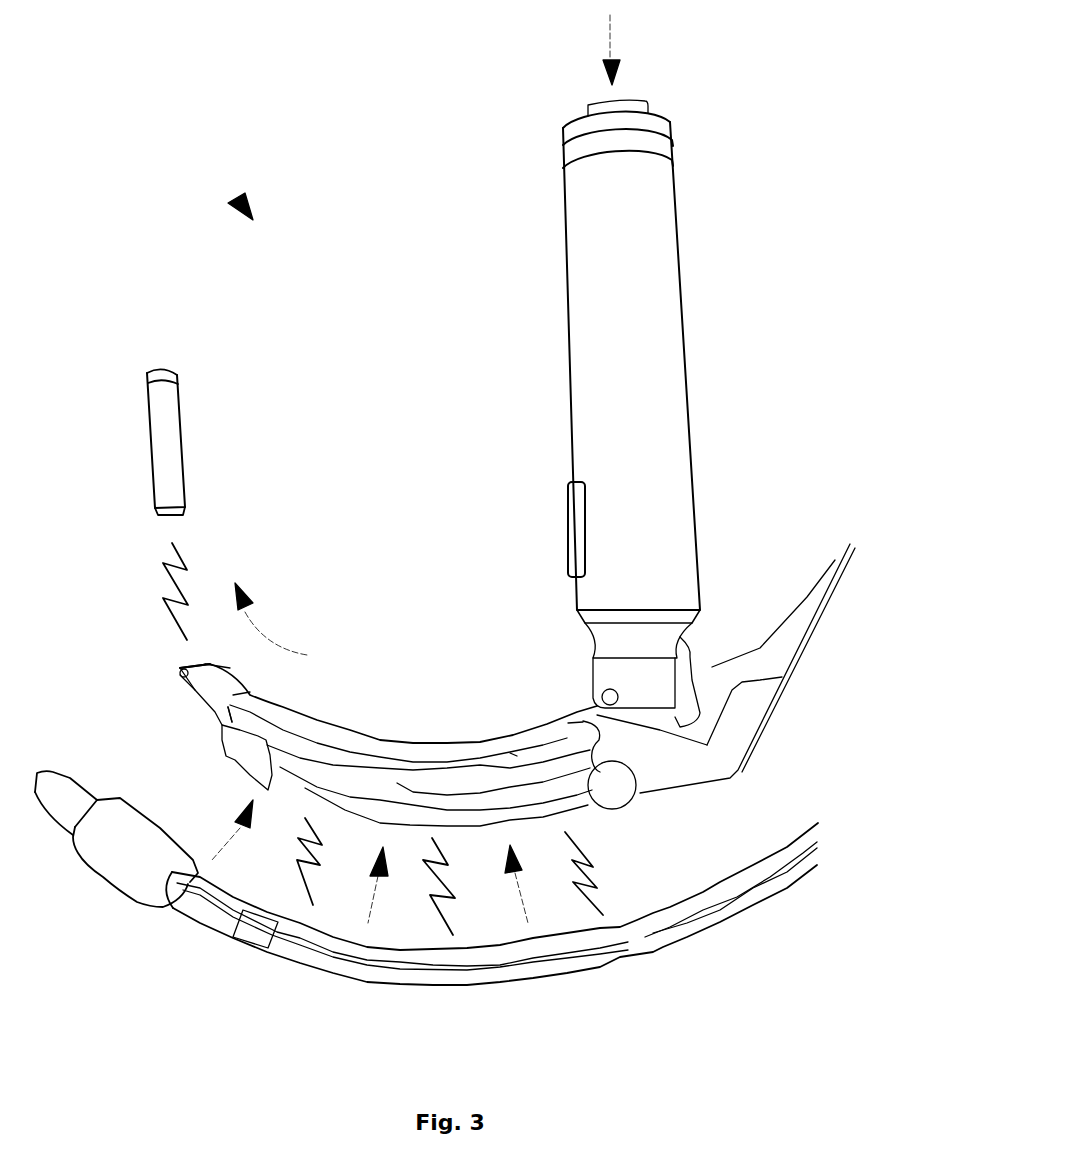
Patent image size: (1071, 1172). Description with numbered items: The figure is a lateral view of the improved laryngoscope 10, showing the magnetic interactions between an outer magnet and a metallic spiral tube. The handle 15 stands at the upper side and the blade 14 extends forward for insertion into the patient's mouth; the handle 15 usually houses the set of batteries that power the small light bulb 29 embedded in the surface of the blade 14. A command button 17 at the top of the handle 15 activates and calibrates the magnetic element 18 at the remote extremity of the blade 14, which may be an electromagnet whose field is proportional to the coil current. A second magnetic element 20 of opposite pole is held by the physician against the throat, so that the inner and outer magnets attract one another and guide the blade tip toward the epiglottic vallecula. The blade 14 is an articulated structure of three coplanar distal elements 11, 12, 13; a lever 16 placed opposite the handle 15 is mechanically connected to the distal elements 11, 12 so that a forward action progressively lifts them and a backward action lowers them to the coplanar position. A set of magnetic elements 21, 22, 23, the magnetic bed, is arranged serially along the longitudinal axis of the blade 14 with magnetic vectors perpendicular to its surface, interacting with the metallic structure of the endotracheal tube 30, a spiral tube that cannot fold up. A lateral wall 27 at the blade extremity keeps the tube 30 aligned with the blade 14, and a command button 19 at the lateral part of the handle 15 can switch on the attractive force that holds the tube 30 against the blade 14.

The laryngoscope 10 is at (230, 196).
The distal element 11 is at (193, 683).
The distal element 12 is at (317, 727).
The distal element 13 is at (403, 740).
The blade 14 is at (527, 733).
The handle 15 is at (683, 232).
The lever 16 is at (850, 540).
The command button 17 is at (612, 97).
The magnetic element 18 is at (187, 667).
The command button 19 is at (567, 522).
The magnetic element 20 is at (183, 403).
The magnetic element 21 is at (305, 782).
The magnetic element 22 is at (372, 803).
The magnetic element 23 is at (507, 800).
The lateral wall 27 is at (228, 757).
The light bulb 29 is at (222, 705).
The endotracheal tube 30 is at (267, 957).